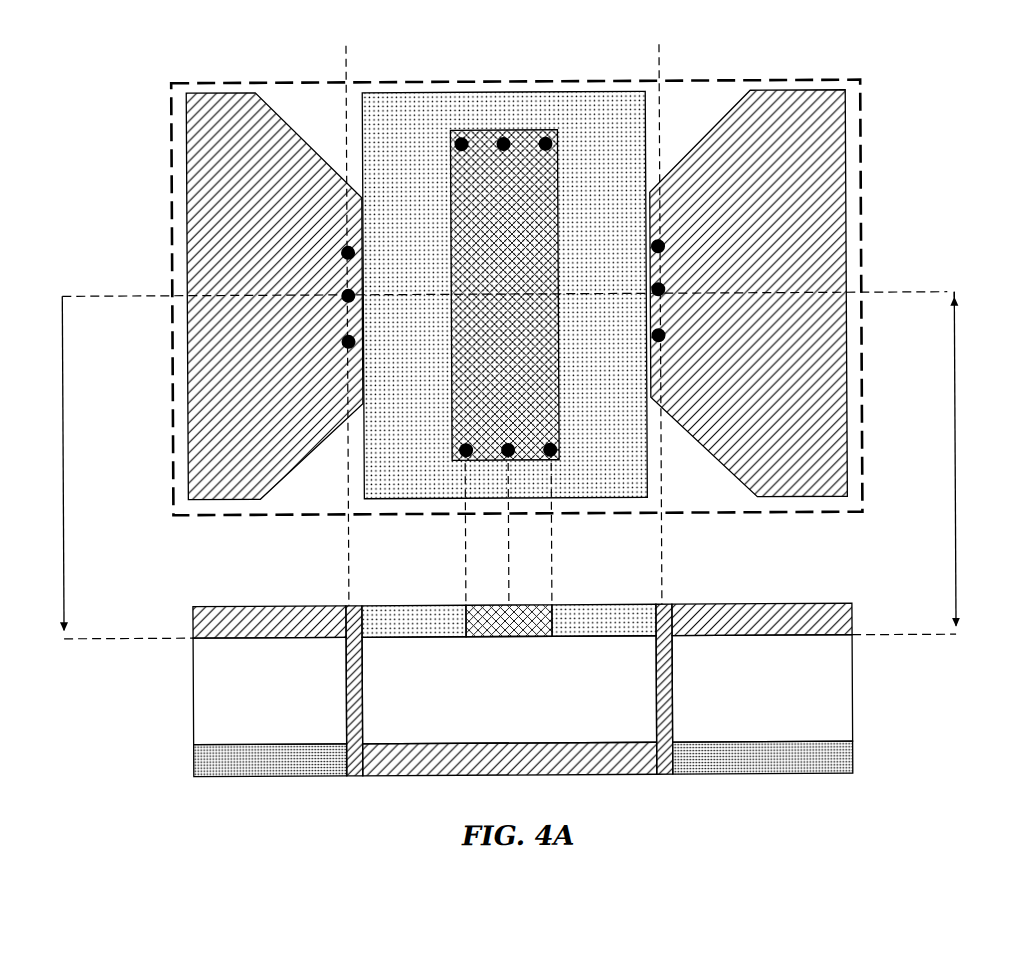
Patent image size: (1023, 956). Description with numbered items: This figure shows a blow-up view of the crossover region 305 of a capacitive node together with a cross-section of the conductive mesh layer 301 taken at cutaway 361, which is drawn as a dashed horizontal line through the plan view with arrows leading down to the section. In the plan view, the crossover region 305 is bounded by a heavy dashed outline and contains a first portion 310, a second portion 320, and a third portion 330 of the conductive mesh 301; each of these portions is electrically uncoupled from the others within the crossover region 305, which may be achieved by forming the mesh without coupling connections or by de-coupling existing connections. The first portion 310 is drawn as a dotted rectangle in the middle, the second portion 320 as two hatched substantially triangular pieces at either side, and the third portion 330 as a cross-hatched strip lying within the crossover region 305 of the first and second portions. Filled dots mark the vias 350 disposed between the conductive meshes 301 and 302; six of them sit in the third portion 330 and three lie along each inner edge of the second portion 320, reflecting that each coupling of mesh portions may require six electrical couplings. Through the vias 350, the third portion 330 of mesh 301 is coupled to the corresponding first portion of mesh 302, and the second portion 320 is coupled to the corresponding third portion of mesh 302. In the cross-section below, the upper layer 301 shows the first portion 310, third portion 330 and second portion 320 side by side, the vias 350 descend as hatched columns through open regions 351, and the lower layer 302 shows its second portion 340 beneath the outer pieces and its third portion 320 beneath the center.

The conductive mesh layer 301 is at (178, 606).
The conductive mesh layer 302 is at (178, 743).
The crossover region 305 is at (866, 110).
The first portion 310 is at (497, 100).
The second portion 320 is at (235, 143).
The third portion 330 is at (467, 213).
The second portion 340 is at (523, 758).
The vias 350 is at (340, 340).
The cavity 351 is at (288, 695).
The cutaway 361 is at (960, 291).